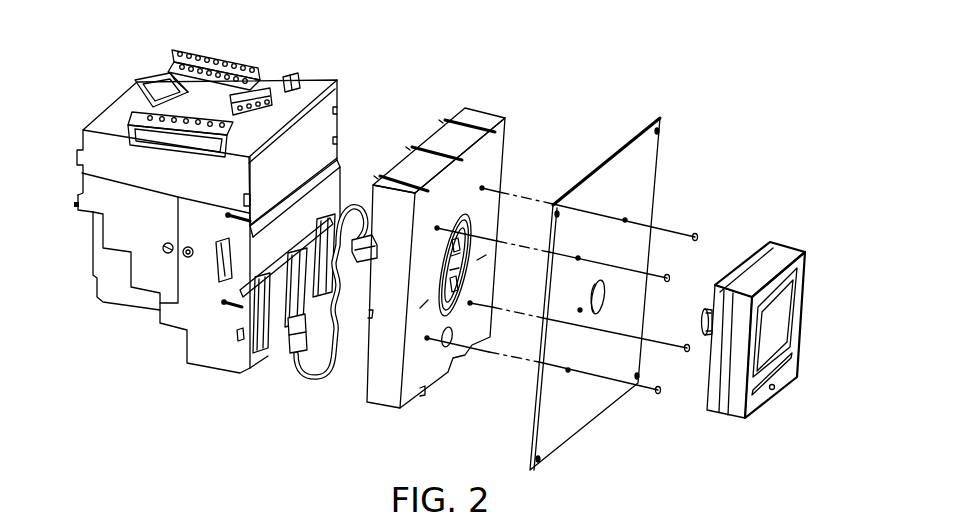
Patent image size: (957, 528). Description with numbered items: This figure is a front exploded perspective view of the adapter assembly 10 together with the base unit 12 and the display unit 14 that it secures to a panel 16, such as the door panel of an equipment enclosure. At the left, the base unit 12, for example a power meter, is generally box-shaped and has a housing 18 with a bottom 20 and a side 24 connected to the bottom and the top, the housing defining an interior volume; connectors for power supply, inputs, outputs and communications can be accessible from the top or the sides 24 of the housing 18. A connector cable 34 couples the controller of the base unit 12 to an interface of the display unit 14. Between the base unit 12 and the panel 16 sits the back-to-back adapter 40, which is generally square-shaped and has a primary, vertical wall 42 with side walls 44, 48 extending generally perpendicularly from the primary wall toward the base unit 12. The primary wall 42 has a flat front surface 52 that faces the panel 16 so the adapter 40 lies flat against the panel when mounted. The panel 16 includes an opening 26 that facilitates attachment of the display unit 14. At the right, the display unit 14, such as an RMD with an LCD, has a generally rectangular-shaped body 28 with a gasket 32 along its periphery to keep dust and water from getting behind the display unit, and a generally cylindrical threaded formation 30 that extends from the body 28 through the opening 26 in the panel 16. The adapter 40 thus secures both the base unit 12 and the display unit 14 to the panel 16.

The adapter assembly 10 is at (573, 88).
The base unit 12 is at (103, 306).
The display unit 14 is at (805, 243).
The panel 16 is at (650, 155).
The housing 18 is at (76, 205).
The bottom 20 is at (305, 142).
The side 24 is at (205, 95).
The opening 26 is at (612, 285).
The body 28 is at (733, 417).
The threaded formation 30 is at (703, 330).
The gasket 32 is at (752, 259).
The connector cable 34 is at (293, 360).
The back-to-back adapter 40 is at (470, 108).
The primary wall 42 is at (493, 158).
The side wall 44 is at (430, 157).
The side wall 48 is at (385, 373).
The front surface 52 is at (484, 170).